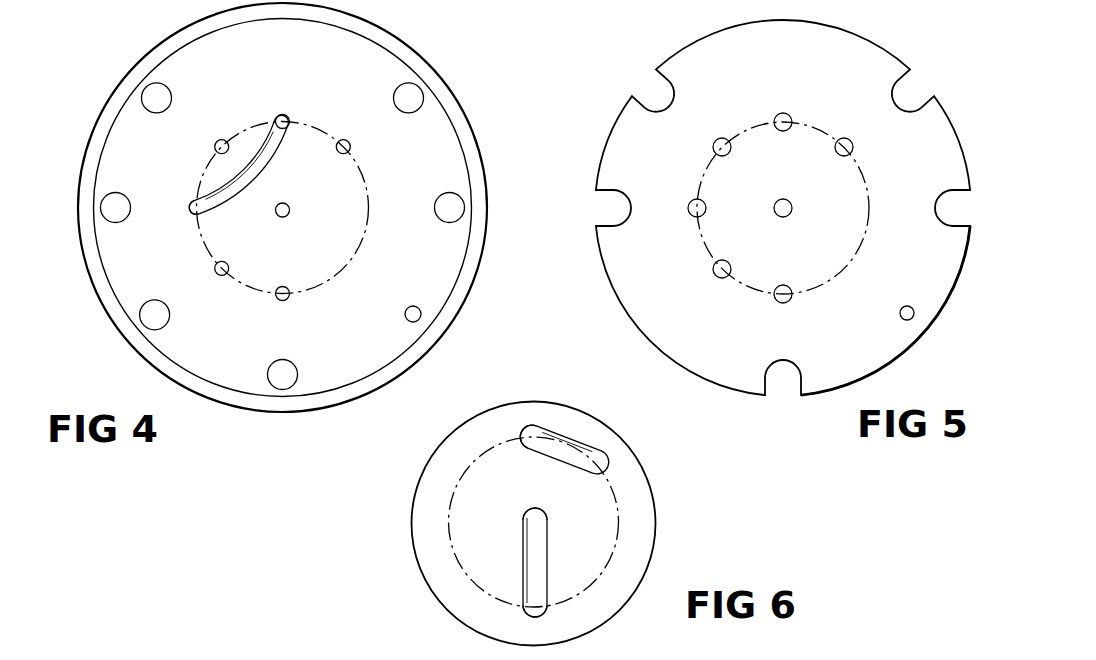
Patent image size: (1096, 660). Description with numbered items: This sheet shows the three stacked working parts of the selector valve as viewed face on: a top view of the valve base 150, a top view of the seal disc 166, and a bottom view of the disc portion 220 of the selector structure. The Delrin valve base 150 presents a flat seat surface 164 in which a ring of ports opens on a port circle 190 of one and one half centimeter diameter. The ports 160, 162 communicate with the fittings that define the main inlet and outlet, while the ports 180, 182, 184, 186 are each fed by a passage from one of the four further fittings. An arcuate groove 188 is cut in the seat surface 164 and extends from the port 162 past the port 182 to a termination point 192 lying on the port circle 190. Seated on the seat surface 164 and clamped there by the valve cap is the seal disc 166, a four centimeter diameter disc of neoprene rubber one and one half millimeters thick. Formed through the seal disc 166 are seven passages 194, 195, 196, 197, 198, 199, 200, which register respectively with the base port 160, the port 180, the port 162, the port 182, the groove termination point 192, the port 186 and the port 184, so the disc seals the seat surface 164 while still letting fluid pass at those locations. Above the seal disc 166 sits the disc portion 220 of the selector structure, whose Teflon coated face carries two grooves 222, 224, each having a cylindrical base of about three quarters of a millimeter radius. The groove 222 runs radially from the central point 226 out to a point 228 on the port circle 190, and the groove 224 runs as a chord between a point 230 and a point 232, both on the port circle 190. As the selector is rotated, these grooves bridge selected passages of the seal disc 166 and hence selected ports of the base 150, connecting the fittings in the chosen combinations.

In FIG. 4, the valve base 150 is at (162, 379).
In FIG. 4, the seat surface 164 is at (145, 312).
In FIG. 4, the port circle 190 is at (203, 243).
In FIG. 5, the port circle 190 is at (700, 232).
In FIG. 6, the port circle 190 is at (452, 548).
In FIG. 4, the port 160 is at (284, 213).
In FIG. 4, the port 162 is at (283, 117).
In FIG. 4, the port 180 is at (341, 150).
In FIG. 4, the port 182 is at (226, 150).
In FIG. 4, the port 184 is at (286, 295).
In FIG. 4, the port 186 is at (218, 273).
In FIG. 4, the arcuate groove 188 is at (269, 170).
In FIG. 4, the termination point 192 is at (195, 205).
In FIG. 5, the seal disc 166 is at (624, 313).
In FIG. 5, the passage 194 is at (786, 203).
In FIG. 5, the passage 195 is at (843, 151).
In FIG. 5, the passage 196 is at (786, 117).
In FIG. 5, the passage 197 is at (724, 151).
In FIG. 5, the passage 198 is at (697, 206).
In FIG. 5, the passage 199 is at (720, 273).
In FIG. 5, the passage 200 is at (787, 293).
In FIG. 6, the disc portion 220 is at (657, 534).
In FIG. 6, the groove 222 is at (541, 574).
In FIG. 6, the groove 224 is at (558, 457).
In FIG. 6, the central point 226 is at (530, 518).
In FIG. 6, the point 228 is at (530, 612).
In FIG. 6, the point 230 is at (530, 432).
In FIG. 6, the point 232 is at (601, 460).